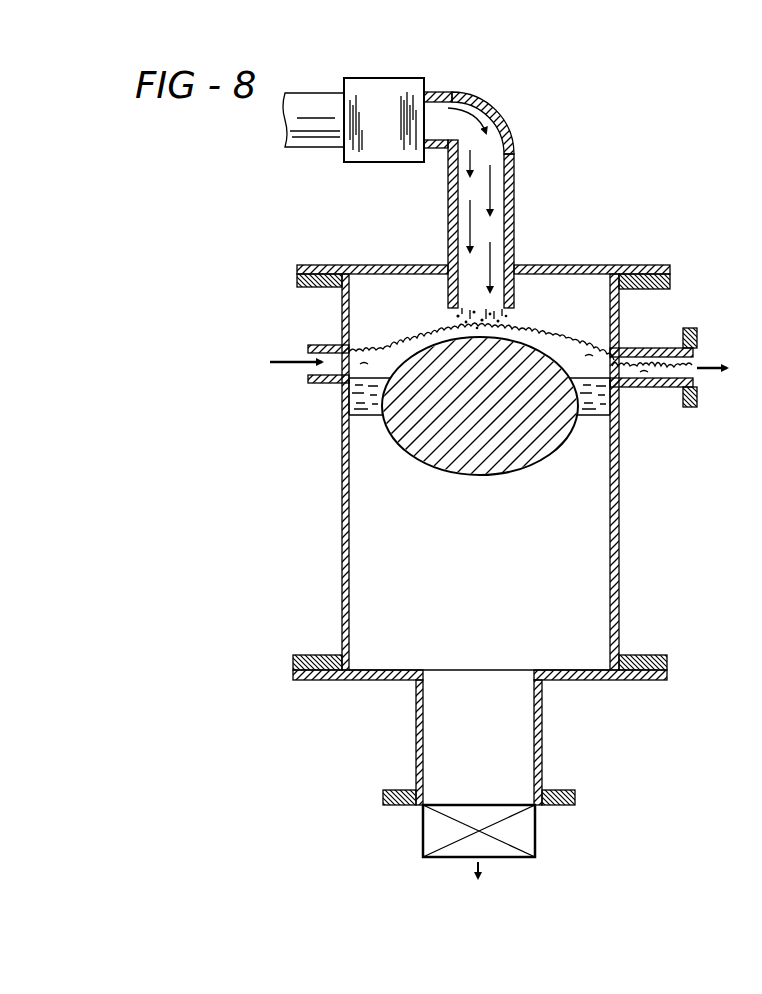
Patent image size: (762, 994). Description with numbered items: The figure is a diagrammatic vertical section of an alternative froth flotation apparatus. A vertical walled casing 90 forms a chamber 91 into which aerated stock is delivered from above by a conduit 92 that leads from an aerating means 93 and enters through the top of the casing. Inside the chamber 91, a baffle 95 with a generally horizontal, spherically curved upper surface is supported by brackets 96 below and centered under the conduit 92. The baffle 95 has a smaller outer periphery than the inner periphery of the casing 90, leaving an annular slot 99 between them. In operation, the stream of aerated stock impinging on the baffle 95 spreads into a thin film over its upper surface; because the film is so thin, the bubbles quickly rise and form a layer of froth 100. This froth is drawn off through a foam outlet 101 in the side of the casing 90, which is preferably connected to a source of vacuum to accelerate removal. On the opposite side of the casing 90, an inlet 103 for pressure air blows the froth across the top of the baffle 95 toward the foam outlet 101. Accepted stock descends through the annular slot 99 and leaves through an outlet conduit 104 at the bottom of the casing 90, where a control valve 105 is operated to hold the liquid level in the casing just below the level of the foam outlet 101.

The casing 90 is at (620, 507).
The chamber 91 is at (587, 613).
The conduit 92 is at (493, 108).
The aerating means 93 is at (383, 78).
The baffle 95 is at (490, 463).
The brackets 96 is at (375, 412).
The annular slot 99 is at (353, 397).
The layer of froth 100 is at (547, 325).
The foam outlet 101 is at (647, 388).
The inlet for pressure air 103 is at (328, 345).
The outlet conduit 104 is at (542, 742).
The control valve 105 is at (522, 835).